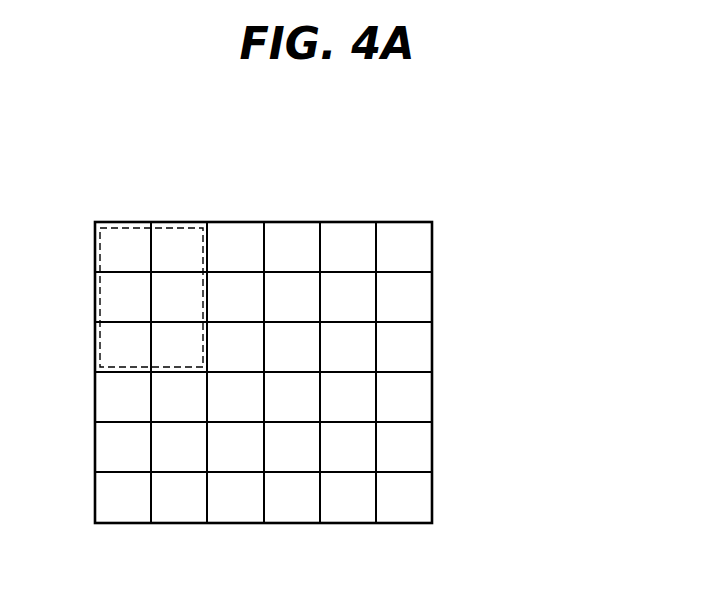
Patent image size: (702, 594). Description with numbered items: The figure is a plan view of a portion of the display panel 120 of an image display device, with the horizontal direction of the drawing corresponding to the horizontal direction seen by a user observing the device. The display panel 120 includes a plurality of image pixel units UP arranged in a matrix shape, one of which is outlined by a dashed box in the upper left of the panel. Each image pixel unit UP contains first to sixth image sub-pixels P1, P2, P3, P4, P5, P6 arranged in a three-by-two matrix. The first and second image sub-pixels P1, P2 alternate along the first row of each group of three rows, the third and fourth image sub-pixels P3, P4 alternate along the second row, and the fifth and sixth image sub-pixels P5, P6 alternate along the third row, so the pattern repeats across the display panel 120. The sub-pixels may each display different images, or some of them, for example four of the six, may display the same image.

The display panel 120 is at (334, 372).
The image pixel unit UP is at (128, 228).
The first image sub-pixel P1 is at (235, 322).
The second image sub-pixel P2 is at (291, 322).
The third image sub-pixel P3 is at (235, 372).
The fourth image sub-pixel P4 is at (291, 372).
The fifth image sub-pixel P5 is at (235, 422).
The sixth image sub-pixel P6 is at (291, 422).